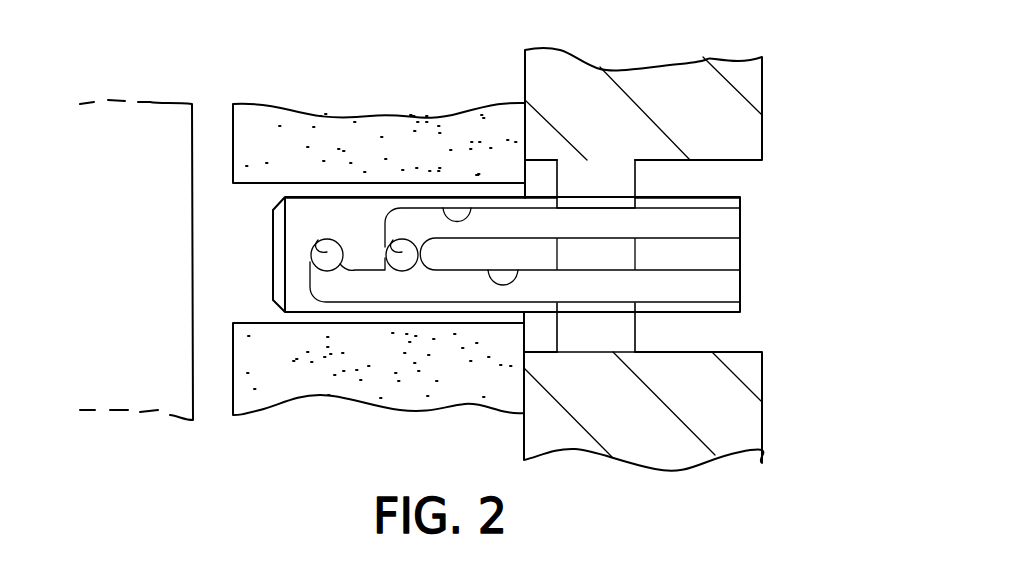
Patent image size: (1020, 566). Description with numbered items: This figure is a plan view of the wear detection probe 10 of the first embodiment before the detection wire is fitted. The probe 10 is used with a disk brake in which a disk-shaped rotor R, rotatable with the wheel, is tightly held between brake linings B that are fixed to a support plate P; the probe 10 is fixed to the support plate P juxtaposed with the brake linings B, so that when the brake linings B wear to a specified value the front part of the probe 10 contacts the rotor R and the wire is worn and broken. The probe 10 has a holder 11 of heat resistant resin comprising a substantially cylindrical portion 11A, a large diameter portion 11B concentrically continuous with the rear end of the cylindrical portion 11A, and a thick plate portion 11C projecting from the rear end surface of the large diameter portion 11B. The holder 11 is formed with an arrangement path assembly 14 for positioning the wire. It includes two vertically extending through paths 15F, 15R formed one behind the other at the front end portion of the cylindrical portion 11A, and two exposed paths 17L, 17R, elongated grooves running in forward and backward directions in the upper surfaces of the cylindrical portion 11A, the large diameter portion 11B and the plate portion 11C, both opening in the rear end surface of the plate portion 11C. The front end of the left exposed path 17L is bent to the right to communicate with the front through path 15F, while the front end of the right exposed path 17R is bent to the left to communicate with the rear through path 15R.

The rotor R is at (188, 177).
The brake linings B is at (268, 152).
The support plate P is at (575, 82).
The wear detection probe 10 is at (763, 192).
The holder 11 is at (857, 292).
The cylindrical portion 11A is at (473, 303).
The large diameter portion 11B is at (617, 330).
The plate portion 11C is at (708, 312).
The arrangement path assembly 14 is at (425, 203).
The front through path 15F is at (323, 250).
The rear through path 15R is at (390, 243).
The right exposed path 17R is at (472, 206).
The left exposed path 17L is at (498, 289).